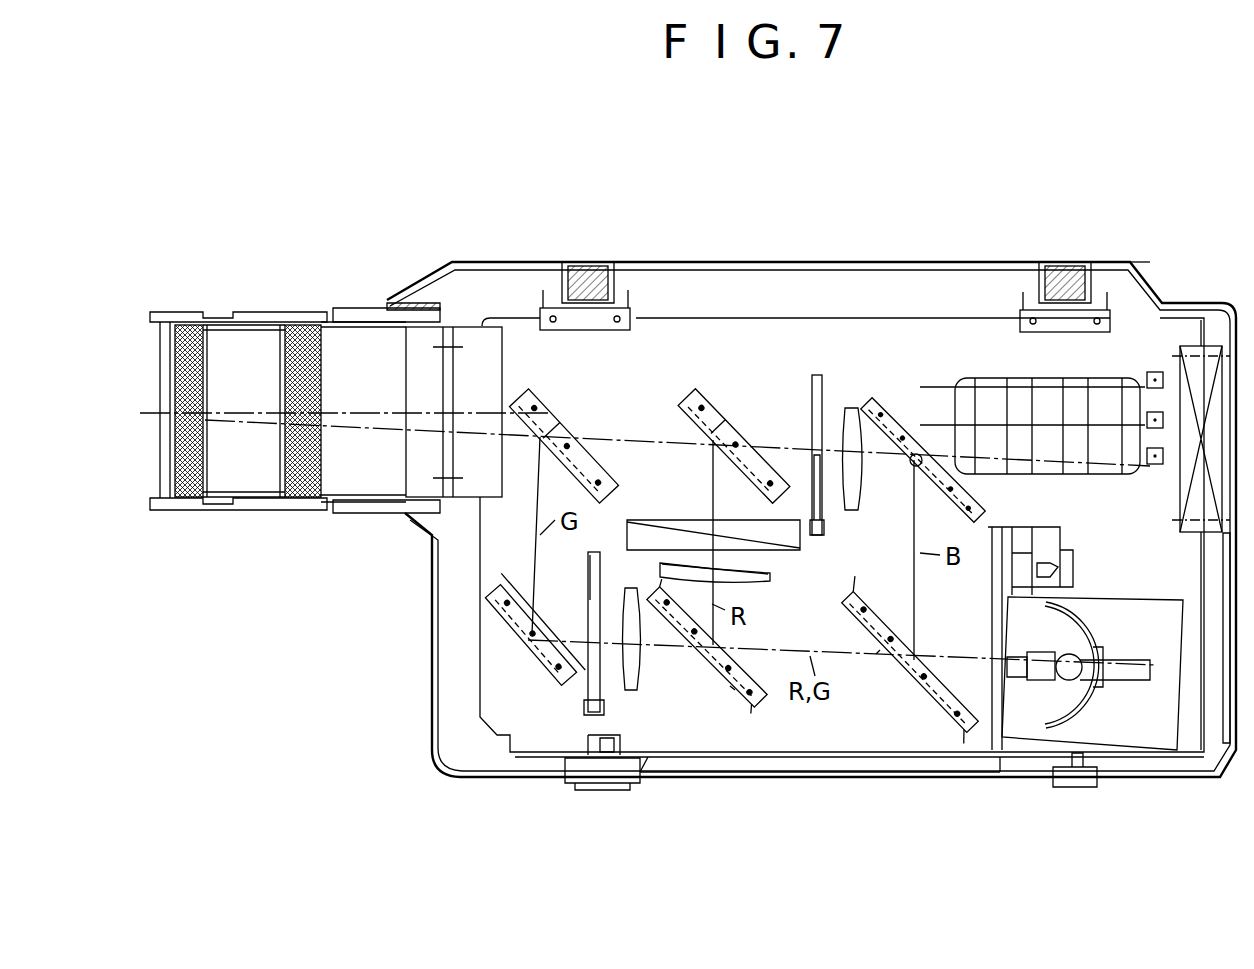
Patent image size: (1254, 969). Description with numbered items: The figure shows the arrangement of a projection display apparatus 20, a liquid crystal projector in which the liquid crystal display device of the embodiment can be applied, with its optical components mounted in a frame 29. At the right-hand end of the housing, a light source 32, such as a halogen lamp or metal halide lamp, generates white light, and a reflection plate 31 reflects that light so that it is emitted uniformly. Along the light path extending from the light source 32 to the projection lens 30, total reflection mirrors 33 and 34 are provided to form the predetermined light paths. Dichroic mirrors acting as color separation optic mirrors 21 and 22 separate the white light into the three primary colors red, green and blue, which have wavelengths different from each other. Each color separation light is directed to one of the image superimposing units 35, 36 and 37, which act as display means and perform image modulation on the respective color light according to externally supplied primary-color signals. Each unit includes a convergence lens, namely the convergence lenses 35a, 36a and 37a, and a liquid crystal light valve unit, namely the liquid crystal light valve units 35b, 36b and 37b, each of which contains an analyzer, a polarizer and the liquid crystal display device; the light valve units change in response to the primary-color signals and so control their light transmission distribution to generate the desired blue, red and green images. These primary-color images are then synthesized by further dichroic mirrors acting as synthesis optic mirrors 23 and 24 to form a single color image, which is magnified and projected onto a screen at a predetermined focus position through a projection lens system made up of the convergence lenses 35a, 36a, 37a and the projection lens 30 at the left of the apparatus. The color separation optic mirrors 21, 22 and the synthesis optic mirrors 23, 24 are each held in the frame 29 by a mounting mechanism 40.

The projection display apparatus 20 is at (864, 157).
The color separation optic mirror 21 is at (930, 660).
The color separation optic mirror 22 is at (702, 655).
The synthesis optic mirror 23 is at (715, 420).
The synthesis optic mirror 24 is at (548, 405).
The frame 29 is at (945, 330).
The projection lens 30 is at (258, 342).
The reflection plate 31 is at (1072, 632).
The light source 32 is at (1040, 665).
The total reflection mirror 33 is at (968, 488).
The total reflection mirror 34 is at (480, 655).
The image superimposing unit 35 is at (620, 708).
The convergence lens 35a is at (641, 668).
The liquid crystal light valve unit 35b is at (601, 578).
The image superimposing unit 36 is at (792, 565).
The convergence lens 36a is at (790, 582).
The liquid crystal light valve unit 36b is at (672, 523).
The image superimposing unit 37 is at (843, 395).
The convergence lens 37a is at (878, 405).
The liquid crystal light valve unit 37b is at (810, 392).
The mounting mechanism 40 is at (565, 423).